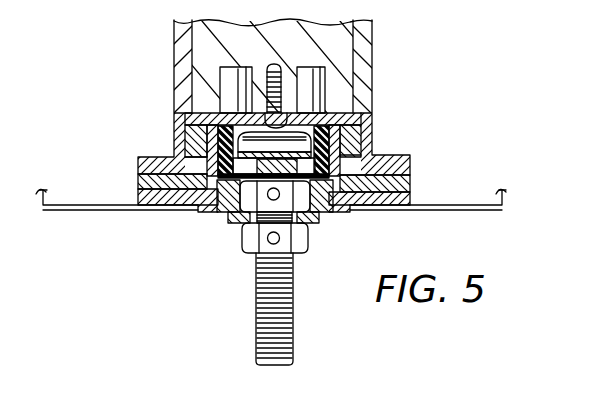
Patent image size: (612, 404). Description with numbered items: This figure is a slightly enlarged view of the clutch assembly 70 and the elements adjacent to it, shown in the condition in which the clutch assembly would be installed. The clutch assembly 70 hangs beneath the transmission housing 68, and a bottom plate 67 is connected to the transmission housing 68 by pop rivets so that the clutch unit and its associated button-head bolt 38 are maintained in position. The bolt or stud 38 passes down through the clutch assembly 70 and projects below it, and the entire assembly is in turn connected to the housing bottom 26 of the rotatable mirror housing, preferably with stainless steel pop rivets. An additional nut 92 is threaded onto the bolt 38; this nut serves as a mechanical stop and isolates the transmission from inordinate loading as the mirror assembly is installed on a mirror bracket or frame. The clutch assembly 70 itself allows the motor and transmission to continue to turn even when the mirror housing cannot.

The transmission housing 68 is at (373, 82).
The bottom plate 67 is at (142, 199).
The bottom 26 is at (458, 205).
The clutch assembly 70 is at (227, 225).
The button-head bolt 38 is at (288, 316).
The additional nut 92 is at (302, 241).